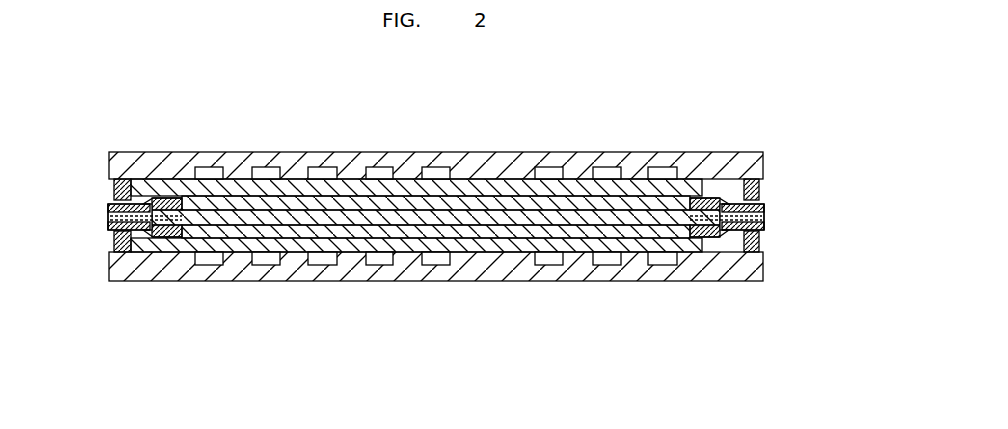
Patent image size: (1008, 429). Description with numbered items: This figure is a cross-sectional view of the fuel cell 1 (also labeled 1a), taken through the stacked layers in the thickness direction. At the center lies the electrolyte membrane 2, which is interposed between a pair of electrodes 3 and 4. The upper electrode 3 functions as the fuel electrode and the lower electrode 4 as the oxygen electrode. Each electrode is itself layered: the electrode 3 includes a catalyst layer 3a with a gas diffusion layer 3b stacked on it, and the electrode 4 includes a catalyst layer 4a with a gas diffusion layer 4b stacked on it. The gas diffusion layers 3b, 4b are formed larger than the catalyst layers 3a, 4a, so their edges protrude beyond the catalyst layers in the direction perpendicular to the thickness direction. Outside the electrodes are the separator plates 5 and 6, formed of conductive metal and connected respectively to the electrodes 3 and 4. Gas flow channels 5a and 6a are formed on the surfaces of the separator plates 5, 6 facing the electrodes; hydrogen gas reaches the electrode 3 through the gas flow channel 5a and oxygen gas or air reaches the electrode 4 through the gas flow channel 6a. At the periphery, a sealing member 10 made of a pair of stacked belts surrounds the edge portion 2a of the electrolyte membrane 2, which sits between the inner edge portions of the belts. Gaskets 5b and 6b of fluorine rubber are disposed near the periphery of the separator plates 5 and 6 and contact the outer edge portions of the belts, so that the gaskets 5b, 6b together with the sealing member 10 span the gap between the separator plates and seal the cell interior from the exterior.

The fuel cell 1 is at (440, 205).
The unit cell 1a is at (688, 147).
The electrolyte membrane 2 is at (348, 213).
The edge portion of the electrolyte membrane 2a is at (168, 200).
The electrode 3 is at (520, 185).
The catalyst layer 3a is at (462, 203).
The gas diffusion layer 3b is at (488, 195).
The electrode 4 is at (462, 245).
The catalyst layer 4a is at (352, 240).
The gas diffusion layer 4b is at (403, 243).
The separator plate 5 is at (240, 160).
The gas flow channel 5a is at (265, 170).
The gasket 5b is at (110, 187).
The separator plate 6 is at (233, 263).
The gas flow channel 6a is at (273, 258).
The gasket 6b is at (110, 238).
The sealing member 10 is at (108, 210).